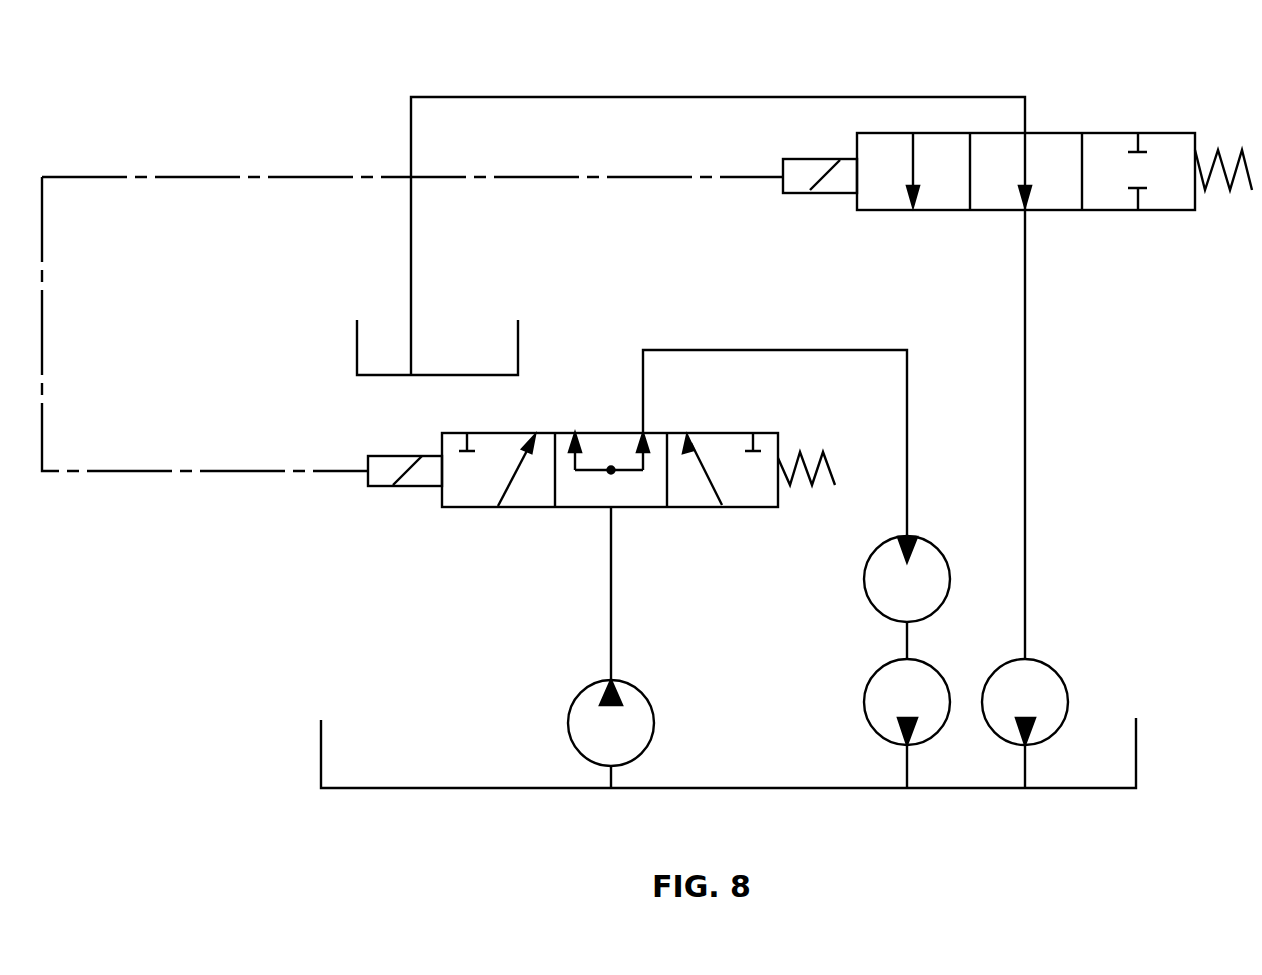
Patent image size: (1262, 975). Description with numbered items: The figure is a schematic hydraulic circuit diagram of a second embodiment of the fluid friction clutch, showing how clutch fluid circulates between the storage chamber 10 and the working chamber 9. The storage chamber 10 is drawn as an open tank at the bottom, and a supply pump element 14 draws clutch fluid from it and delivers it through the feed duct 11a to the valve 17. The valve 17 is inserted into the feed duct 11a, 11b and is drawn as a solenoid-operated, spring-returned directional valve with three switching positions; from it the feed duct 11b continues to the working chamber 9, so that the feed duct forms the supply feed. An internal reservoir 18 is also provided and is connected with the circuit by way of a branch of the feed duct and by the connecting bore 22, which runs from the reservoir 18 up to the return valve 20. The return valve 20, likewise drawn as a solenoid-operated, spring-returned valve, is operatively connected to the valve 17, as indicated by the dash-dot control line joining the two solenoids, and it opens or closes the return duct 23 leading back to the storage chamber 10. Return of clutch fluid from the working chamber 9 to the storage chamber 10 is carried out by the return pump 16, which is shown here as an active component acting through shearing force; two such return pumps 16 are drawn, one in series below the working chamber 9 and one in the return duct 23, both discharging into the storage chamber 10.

The working chamber 9 is at (945, 542).
The storage chamber 10 is at (410, 790).
The feed duct 11a is at (613, 600).
The feed duct 11b is at (790, 350).
The supply pump element 14 is at (568, 718).
The return pump 16 is at (942, 727).
The valve 17 is at (525, 518).
The internal reservoir 18 is at (373, 377).
The return valve 20 is at (1115, 112).
The connecting bore 22 is at (912, 95).
The return duct 23 is at (1027, 463).